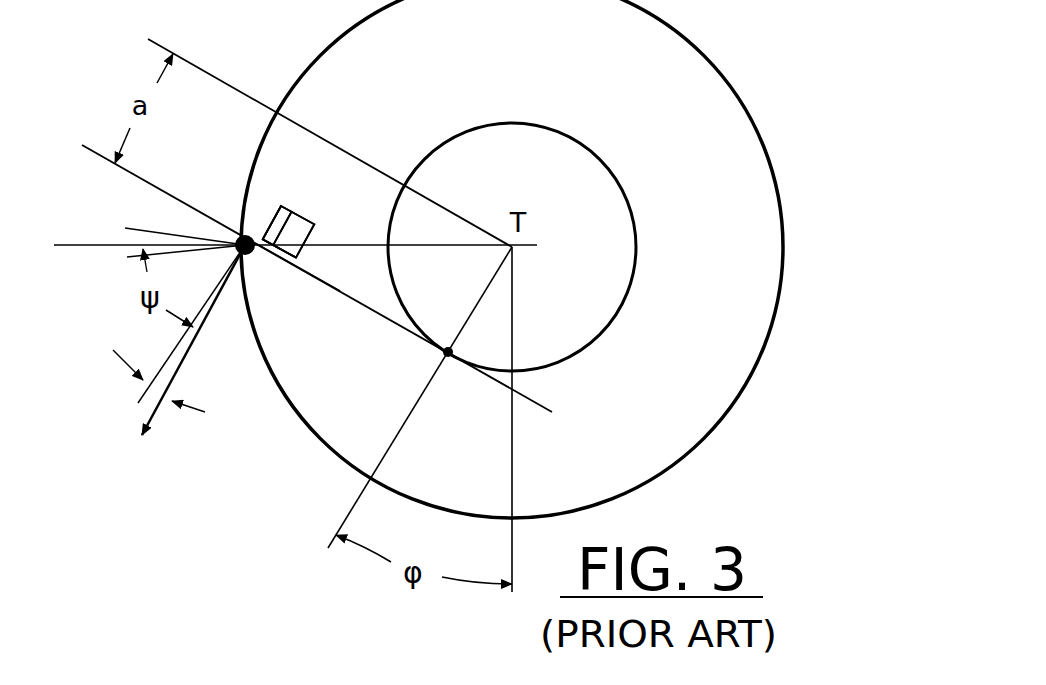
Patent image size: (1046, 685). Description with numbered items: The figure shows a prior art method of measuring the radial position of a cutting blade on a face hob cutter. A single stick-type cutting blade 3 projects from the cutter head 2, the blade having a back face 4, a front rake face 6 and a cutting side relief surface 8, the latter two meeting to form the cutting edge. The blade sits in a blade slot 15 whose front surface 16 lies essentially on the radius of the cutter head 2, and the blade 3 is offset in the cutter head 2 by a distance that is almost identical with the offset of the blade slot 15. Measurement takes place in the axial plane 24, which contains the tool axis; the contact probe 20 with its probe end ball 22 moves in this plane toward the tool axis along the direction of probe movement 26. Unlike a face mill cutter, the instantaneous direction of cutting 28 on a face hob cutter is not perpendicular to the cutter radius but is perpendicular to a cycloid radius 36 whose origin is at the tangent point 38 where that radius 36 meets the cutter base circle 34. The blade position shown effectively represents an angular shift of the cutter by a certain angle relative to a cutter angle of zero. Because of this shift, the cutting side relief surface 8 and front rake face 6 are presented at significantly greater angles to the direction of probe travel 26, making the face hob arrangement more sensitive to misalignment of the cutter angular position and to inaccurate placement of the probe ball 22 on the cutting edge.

The cutter head 2 is at (623, 84).
The cutting blade 3 is at (302, 209).
The back face 4 is at (312, 218).
The front rake face 6 is at (294, 262).
The cutting side relief surface 8 is at (272, 208).
The blade slot 15 is at (274, 216).
The front surface 16 is at (279, 257).
The contact probe 20 is at (147, 230).
The probe end ball 22 is at (238, 252).
The axial plane 24 is at (438, 247).
The direction of probe movement 26 is at (93, 249).
The direction of cutting 28 is at (161, 412).
The cutter base circle 34 is at (639, 266).
The cycloid radius 36 is at (536, 400).
The tangent point 38 is at (448, 357).